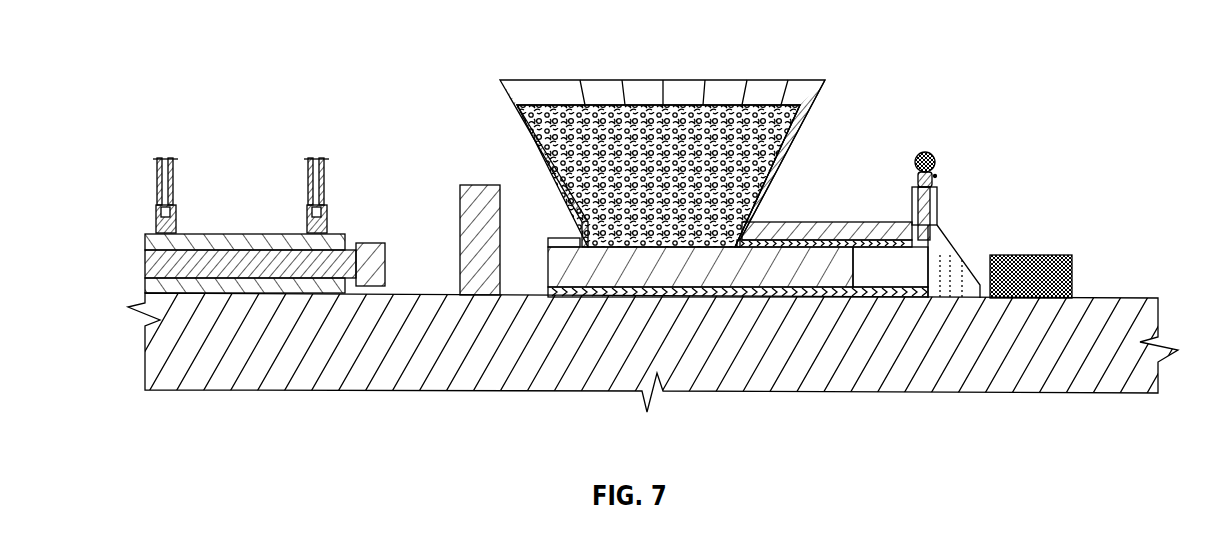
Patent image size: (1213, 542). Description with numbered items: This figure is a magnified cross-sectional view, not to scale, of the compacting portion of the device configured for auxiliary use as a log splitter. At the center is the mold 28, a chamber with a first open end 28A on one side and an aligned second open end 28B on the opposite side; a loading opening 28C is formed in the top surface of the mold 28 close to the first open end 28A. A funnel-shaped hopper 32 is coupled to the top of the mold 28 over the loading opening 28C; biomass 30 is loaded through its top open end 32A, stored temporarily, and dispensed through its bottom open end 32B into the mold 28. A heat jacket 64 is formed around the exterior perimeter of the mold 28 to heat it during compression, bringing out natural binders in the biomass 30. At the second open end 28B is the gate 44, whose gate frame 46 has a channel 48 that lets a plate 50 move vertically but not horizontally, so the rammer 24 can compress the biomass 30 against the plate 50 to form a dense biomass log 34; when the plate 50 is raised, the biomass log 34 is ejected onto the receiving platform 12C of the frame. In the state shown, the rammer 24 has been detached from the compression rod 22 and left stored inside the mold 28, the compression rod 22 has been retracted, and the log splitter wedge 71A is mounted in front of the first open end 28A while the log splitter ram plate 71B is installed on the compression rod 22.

The receiving platform 12C is at (1115, 298).
The compression rod 22 is at (145, 265).
The rammer 24 is at (680, 267).
The mold 28 is at (558, 237).
The first open end 28A is at (548, 268).
The second open end 28B is at (920, 280).
The loading opening 28C is at (737, 250).
The biomass 30 is at (538, 137).
The hopper 32 is at (808, 110).
The top open end 32A is at (535, 35).
The bottom open end 32B is at (775, 173).
The biomass log 34 is at (1010, 255).
The gate 44 is at (952, 207).
The gate frame 46 is at (937, 195).
The channel 48 is at (915, 185).
The plate 50 is at (960, 249).
The heat jacket 64 is at (855, 222).
The log splitter wedge 71A is at (480, 185).
The log splitter ram plate 71B is at (372, 243).